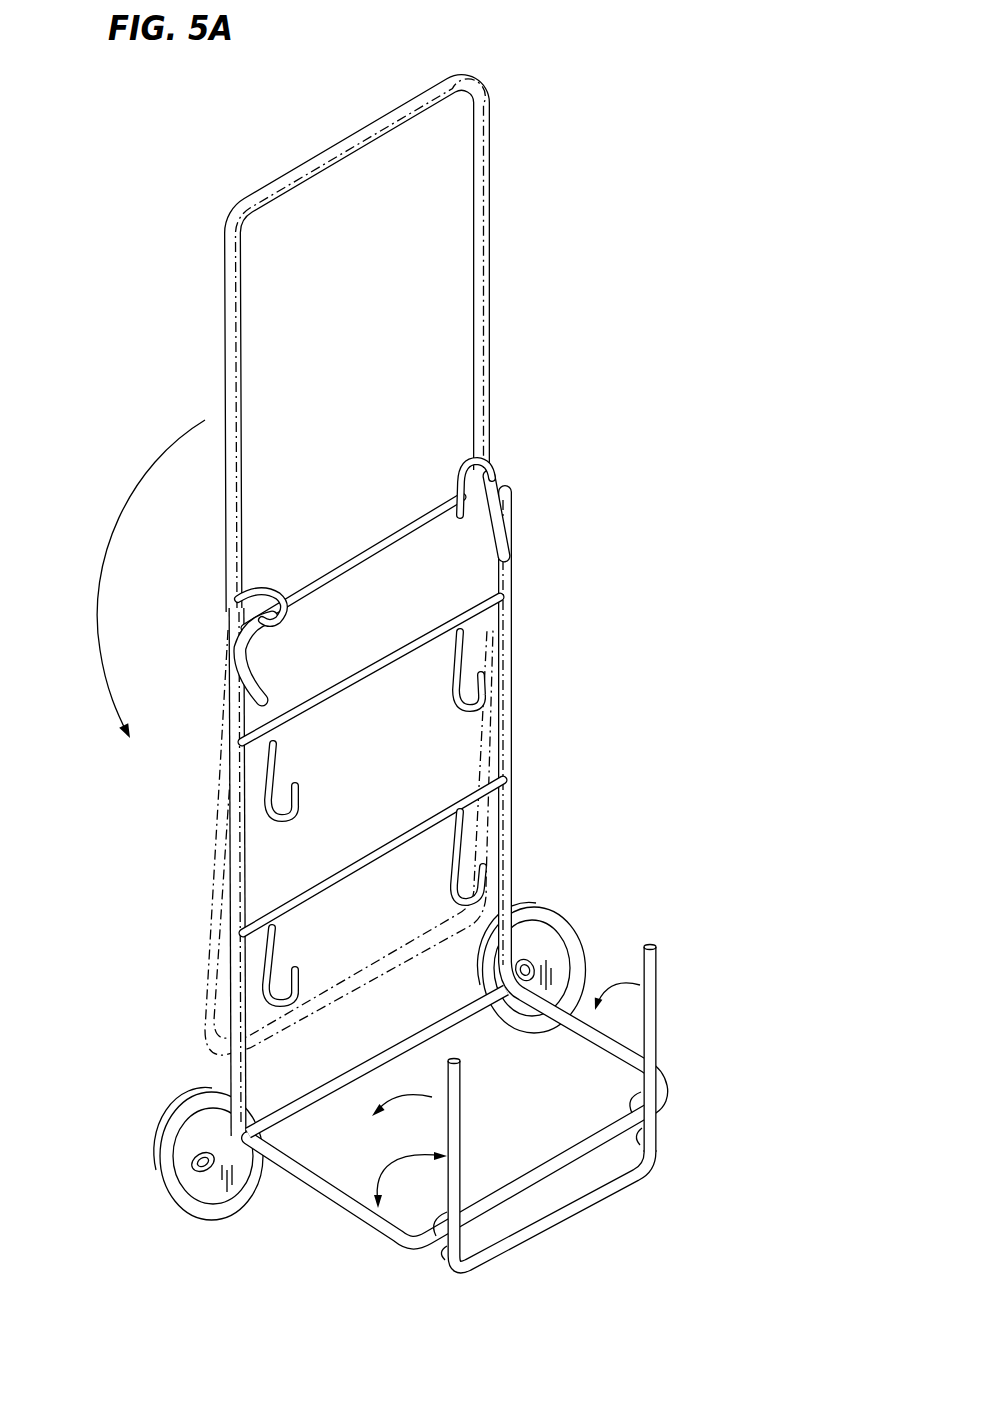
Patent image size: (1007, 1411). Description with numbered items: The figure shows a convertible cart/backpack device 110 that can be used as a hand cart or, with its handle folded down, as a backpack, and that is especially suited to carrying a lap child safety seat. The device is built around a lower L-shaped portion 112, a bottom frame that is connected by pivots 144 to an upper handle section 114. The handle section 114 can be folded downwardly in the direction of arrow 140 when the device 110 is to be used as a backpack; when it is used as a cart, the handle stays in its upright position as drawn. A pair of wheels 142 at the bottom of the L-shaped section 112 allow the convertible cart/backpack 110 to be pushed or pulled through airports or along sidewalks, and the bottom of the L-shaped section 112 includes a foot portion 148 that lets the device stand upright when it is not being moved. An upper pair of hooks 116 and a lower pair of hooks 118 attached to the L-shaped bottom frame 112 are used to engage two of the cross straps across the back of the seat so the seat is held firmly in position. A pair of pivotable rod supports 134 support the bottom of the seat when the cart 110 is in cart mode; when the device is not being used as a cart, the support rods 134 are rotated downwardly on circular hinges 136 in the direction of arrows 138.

The convertible cart/backpack device 110 is at (574, 122).
The lower L-shaped portion 112 is at (507, 740).
The upper handle section 114 is at (483, 300).
The upper pair of hooks 116 is at (447, 690).
The lower pair of hooks 118 is at (455, 878).
The pivotable rod supports 134 is at (654, 1007).
The circular hinges 136 is at (630, 1103).
The arrows 138 is at (617, 975).
The arrow 140 is at (103, 556).
The wheels 142 is at (172, 1113).
The pivots 144 is at (492, 540).
The foot portion 148 is at (567, 1210).